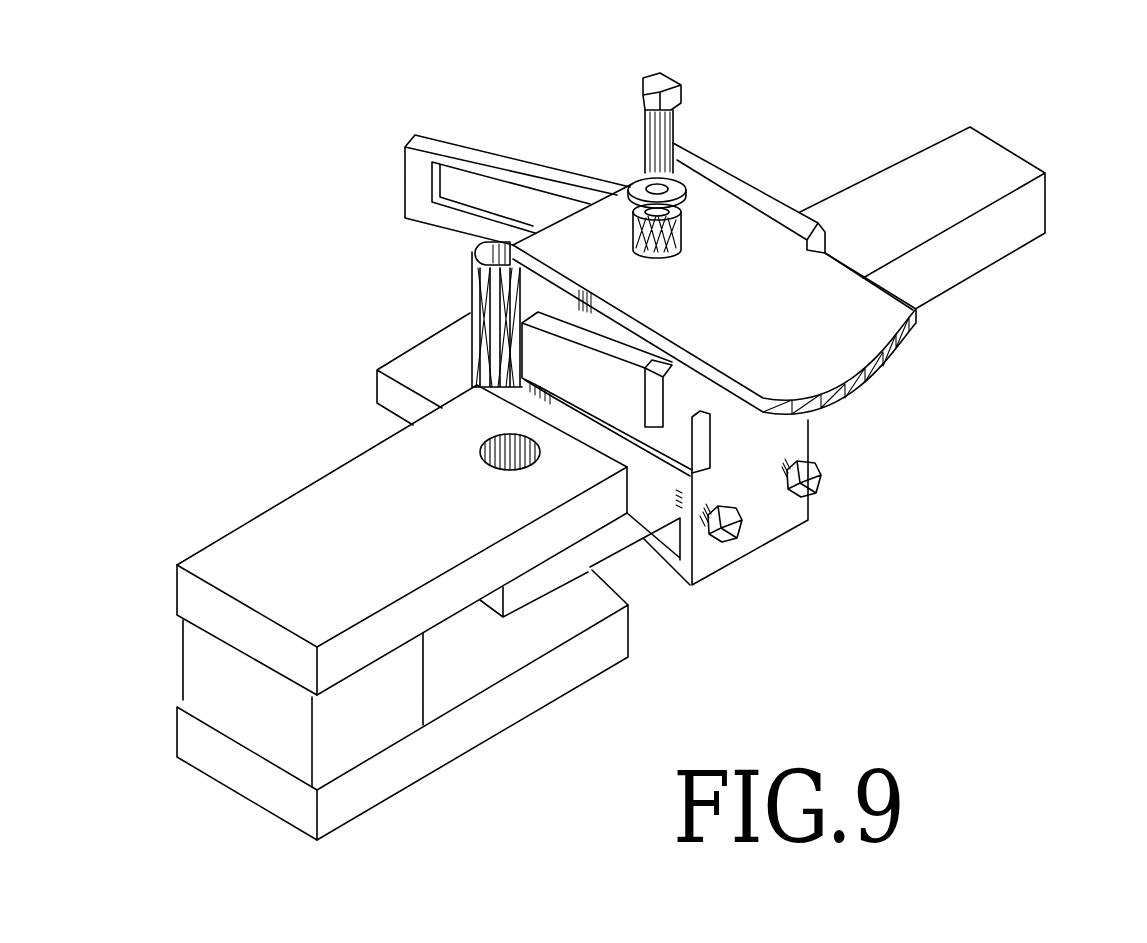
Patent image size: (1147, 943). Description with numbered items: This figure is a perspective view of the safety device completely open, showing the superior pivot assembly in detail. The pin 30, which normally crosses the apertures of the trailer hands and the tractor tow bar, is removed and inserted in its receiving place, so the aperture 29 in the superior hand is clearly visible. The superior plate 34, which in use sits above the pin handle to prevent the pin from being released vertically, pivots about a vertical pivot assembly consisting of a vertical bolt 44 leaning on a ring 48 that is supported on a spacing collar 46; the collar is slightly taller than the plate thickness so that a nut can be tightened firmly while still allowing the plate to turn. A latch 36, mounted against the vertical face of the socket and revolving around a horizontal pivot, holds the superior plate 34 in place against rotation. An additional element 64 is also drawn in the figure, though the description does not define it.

The aperture 29 is at (498, 442).
The pin 30 is at (472, 247).
The superior plate 34 is at (825, 347).
The latch 36 is at (680, 403).
The vertical bolt 44 is at (663, 90).
The spacing collar 46 is at (682, 237).
The ring 48 is at (630, 185).
The spring 64 is at (492, 297).